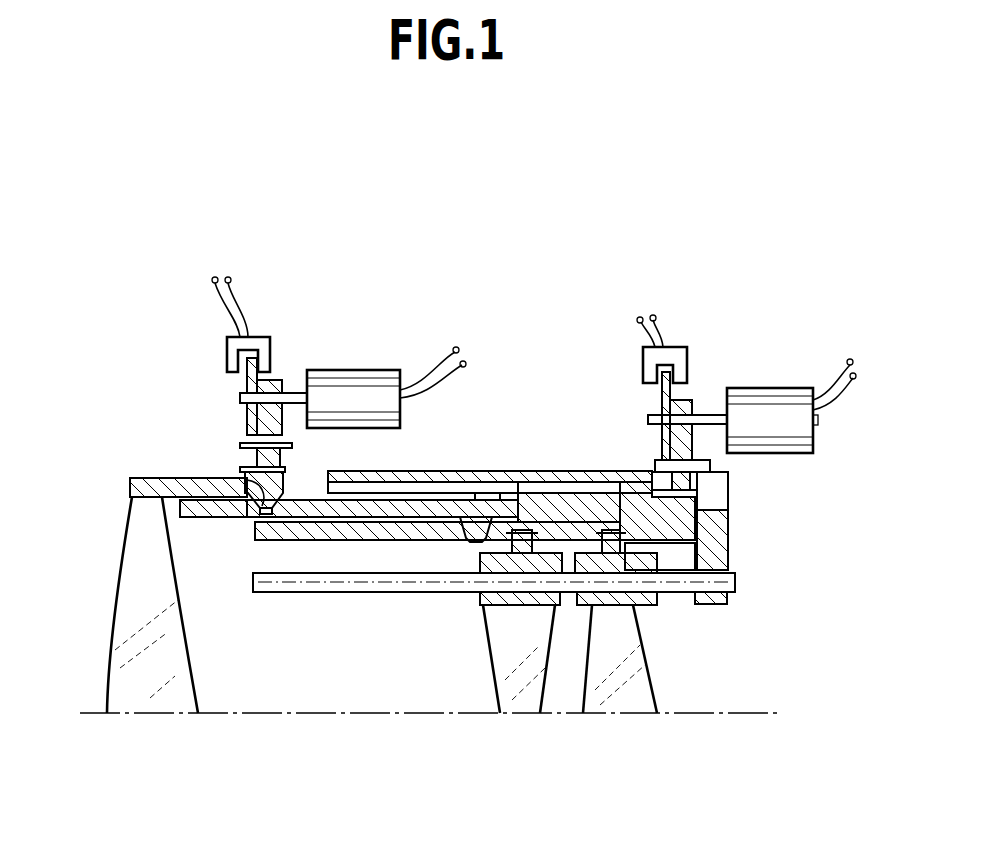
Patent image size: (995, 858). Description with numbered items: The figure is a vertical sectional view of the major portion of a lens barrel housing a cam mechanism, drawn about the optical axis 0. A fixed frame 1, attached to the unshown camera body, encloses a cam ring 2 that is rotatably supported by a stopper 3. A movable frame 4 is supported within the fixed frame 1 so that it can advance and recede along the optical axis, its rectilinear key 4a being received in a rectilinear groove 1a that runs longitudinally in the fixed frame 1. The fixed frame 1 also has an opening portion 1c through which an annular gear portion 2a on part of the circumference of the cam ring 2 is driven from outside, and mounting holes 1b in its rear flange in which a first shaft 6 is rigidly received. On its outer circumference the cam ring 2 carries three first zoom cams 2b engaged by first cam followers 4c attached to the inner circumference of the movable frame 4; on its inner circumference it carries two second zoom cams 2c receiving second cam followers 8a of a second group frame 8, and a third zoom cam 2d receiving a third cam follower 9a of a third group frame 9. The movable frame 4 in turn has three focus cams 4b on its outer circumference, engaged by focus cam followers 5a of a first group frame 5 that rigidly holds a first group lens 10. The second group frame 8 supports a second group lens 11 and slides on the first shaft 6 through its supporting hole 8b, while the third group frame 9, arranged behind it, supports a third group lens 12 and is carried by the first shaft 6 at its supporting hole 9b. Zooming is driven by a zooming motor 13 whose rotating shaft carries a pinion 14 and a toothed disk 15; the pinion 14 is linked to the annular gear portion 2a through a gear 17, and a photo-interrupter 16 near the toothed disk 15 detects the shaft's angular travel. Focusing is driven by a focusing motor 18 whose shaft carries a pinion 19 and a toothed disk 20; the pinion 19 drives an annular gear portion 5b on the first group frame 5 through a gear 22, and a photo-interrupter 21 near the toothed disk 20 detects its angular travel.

The optical axis 0 is at (88, 712).
The fixed frame 1 is at (567, 475).
The rectilinear groove 1a is at (408, 485).
The mounting holes 1b is at (710, 600).
The opening portion 1c is at (720, 498).
The cam ring 2 is at (315, 527).
The annular gear portion 2a is at (650, 494).
The first zoom cams 2b is at (433, 497).
The second zoom cams 2c is at (516, 492).
The third zoom cam 2d is at (545, 493).
The stopper 3 is at (585, 495).
The movable frame 4 is at (365, 506).
The rectilinear key 4a is at (488, 483).
The focus cams 4b is at (186, 478).
The first cam followers 4c is at (467, 534).
The first group frame 5 is at (131, 479).
The focus cam followers 5a is at (241, 483).
The annular gear portion 5b is at (247, 462).
The first shaft 6 is at (317, 582).
The second group frame 8 is at (488, 608).
The second cam followers 8a is at (517, 605).
The supporting hole 8b is at (512, 628).
The third group frame 9 is at (583, 604).
The third cam follower 9a is at (633, 625).
The supporting hole 9b is at (634, 603).
The first group lens 10 is at (186, 648).
The second group lens 11 is at (530, 673).
The third group lens 12 is at (647, 687).
The zooming motor 13 is at (787, 390).
The pinion 14 is at (688, 398).
The toothed disk 15 is at (662, 392).
The photo-interrupter 16 is at (677, 345).
The gear 17 is at (712, 462).
The focusing motor 18 is at (377, 384).
The pinion 19 is at (274, 380).
The toothed disk 20 is at (247, 386).
The photo-interrupter 21 is at (264, 336).
The gear 22 is at (281, 426).